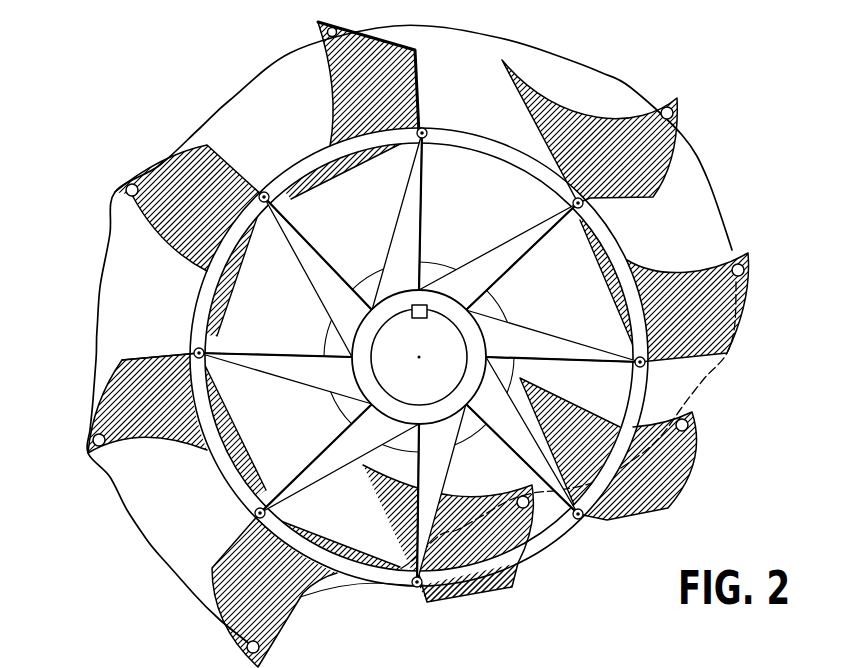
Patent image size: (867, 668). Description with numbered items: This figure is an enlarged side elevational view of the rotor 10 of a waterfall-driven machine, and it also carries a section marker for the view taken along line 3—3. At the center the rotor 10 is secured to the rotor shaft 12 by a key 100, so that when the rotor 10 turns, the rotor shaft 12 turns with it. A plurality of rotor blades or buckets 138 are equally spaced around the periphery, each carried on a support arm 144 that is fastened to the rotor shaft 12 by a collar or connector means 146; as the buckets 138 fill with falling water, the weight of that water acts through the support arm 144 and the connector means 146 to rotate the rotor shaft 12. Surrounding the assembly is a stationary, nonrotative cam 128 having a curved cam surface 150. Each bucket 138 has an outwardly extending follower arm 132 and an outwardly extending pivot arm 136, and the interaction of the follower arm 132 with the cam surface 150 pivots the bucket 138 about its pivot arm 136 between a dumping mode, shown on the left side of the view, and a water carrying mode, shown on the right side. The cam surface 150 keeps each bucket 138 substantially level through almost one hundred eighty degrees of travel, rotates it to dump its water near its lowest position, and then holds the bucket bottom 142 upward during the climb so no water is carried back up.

The rotor 10 is at (433, 334).
The rotor shaft 12 is at (452, 343).
The key 100 is at (420, 305).
The cam 128 is at (110, 253).
The follower arm 132 is at (132, 184).
The pivot arm 136 is at (430, 128).
The rotor blade or bucket 138 is at (600, 127).
The bucket bottom 142 is at (155, 356).
The support arm 144 is at (287, 358).
The collar or connector means 146 is at (340, 402).
The cam surface 150 is at (704, 162).
The section line 3- 3 is at (38, 370).